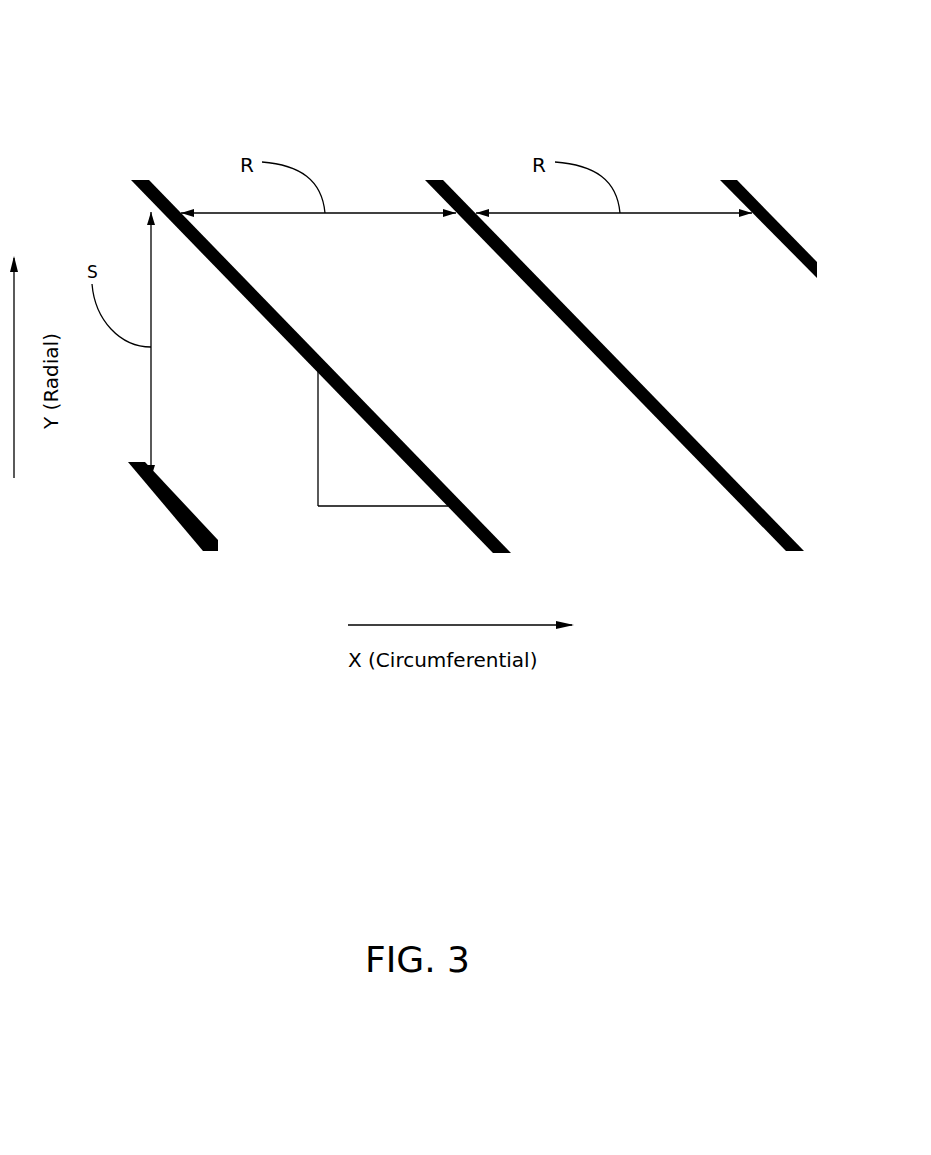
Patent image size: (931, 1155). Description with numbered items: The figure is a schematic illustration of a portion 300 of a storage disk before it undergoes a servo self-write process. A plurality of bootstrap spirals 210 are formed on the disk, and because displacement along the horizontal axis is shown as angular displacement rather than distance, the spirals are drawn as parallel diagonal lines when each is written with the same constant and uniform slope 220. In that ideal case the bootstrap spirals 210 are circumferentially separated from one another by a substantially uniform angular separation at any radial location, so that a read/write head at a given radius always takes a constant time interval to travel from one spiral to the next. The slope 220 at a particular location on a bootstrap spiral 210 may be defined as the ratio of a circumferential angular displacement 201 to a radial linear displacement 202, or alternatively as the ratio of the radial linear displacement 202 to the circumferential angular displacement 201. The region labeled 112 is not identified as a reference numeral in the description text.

The portion of storage disk 300 is at (160, 74).
The slope 220 is at (405, 425).
The platform or wall surface 112 is at (755, 345).
The bootstrap spirals 210 is at (188, 537).
The radial linear displacement 202 is at (318, 430).
The circumferential angular displacement 201 is at (380, 507).